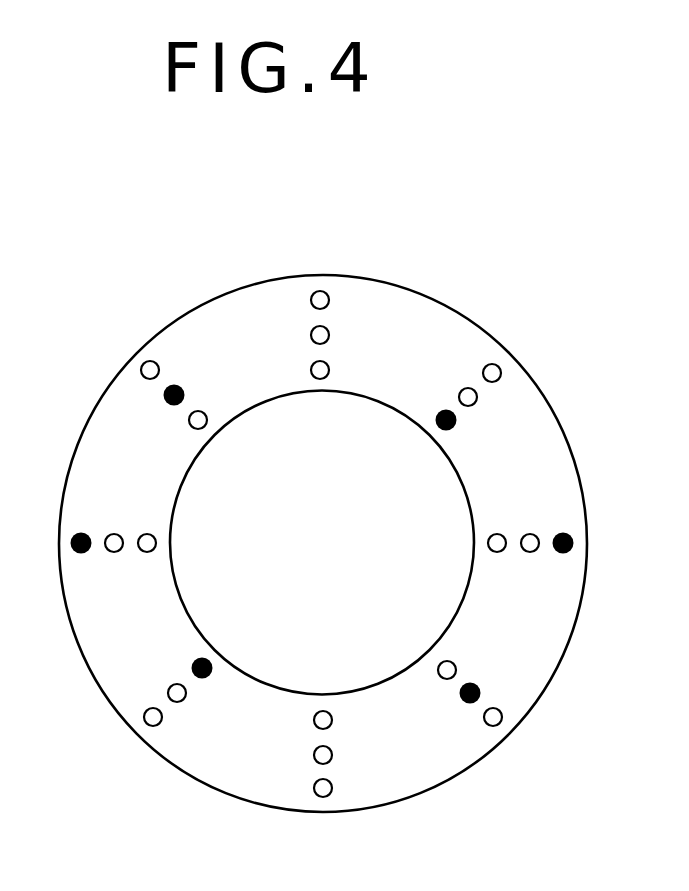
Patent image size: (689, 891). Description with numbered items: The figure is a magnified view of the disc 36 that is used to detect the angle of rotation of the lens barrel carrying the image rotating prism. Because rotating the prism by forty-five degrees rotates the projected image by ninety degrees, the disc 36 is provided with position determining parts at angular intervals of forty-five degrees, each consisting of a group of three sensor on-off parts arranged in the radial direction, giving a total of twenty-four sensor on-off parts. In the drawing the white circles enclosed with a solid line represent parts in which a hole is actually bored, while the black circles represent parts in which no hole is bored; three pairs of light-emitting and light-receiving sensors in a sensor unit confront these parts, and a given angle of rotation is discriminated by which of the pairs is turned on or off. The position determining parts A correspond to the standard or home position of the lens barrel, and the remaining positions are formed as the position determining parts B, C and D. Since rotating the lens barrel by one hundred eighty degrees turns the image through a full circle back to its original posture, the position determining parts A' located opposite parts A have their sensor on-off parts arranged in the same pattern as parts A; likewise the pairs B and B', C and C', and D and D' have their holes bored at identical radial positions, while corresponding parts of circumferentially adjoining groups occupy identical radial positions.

The disc 36 is at (543, 457).
The position determining parts A is at (324, 782).
The position determining parts A' is at (320, 309).
The position determining parts B is at (160, 711).
The position determining parts B' is at (489, 380).
The position determining parts C is at (92, 544).
The position determining parts C' is at (557, 546).
The position determining parts D is at (157, 376).
The position determining parts D' is at (492, 714).